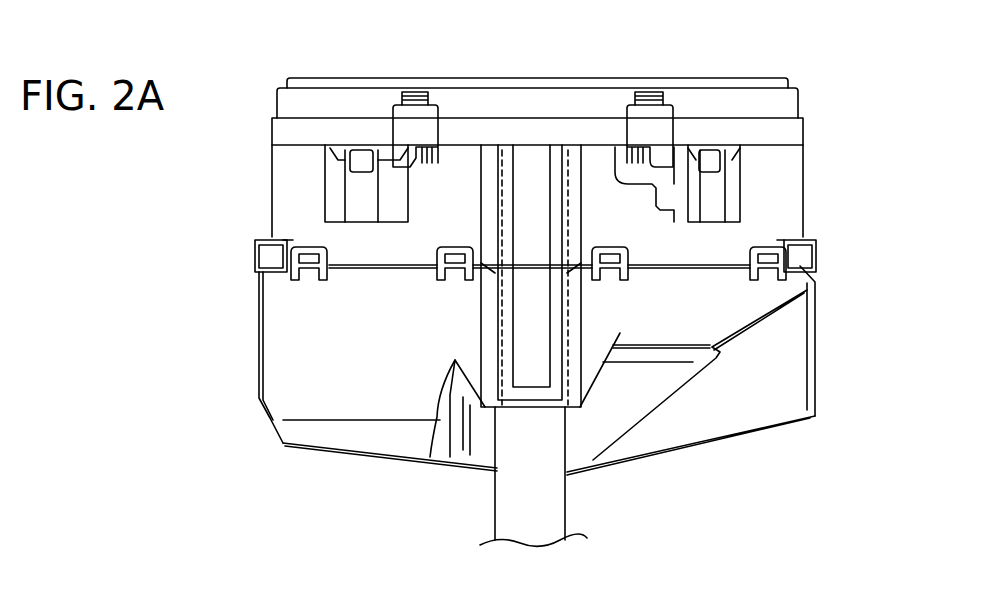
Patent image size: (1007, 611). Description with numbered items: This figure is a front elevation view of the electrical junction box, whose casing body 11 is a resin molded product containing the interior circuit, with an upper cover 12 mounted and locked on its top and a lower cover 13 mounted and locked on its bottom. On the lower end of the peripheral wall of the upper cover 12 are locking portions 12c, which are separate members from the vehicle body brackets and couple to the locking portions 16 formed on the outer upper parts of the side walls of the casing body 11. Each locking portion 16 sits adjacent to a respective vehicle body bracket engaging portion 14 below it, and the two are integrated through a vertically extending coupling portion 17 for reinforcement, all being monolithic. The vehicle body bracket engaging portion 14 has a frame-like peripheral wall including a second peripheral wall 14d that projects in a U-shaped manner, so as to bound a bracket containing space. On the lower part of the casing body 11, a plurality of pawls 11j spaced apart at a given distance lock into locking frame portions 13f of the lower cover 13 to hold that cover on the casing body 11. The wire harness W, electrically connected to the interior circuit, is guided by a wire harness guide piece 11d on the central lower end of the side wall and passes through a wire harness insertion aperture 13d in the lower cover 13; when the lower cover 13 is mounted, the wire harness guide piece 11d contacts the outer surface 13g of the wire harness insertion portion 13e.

The casing body 11 is at (792, 157).
The wire harness guide piece 11d is at (533, 373).
The pawls 11j is at (450, 267).
The upper cover 12 is at (788, 103).
The locking portions 12c is at (418, 97).
The lower cover 13 is at (790, 350).
The wire harness insertion aperture 13d is at (573, 373).
The wire harness insertion portion 13e is at (475, 372).
The locking frame portions 13f is at (257, 257).
The outer surface 13g is at (470, 405).
The vehicle body bracket engaging portion 14 is at (330, 190).
The second peripheral wall 14d is at (662, 220).
The locking portions 16 is at (400, 112).
The coupling portion 17 is at (401, 155).
The wire harness W is at (547, 510).